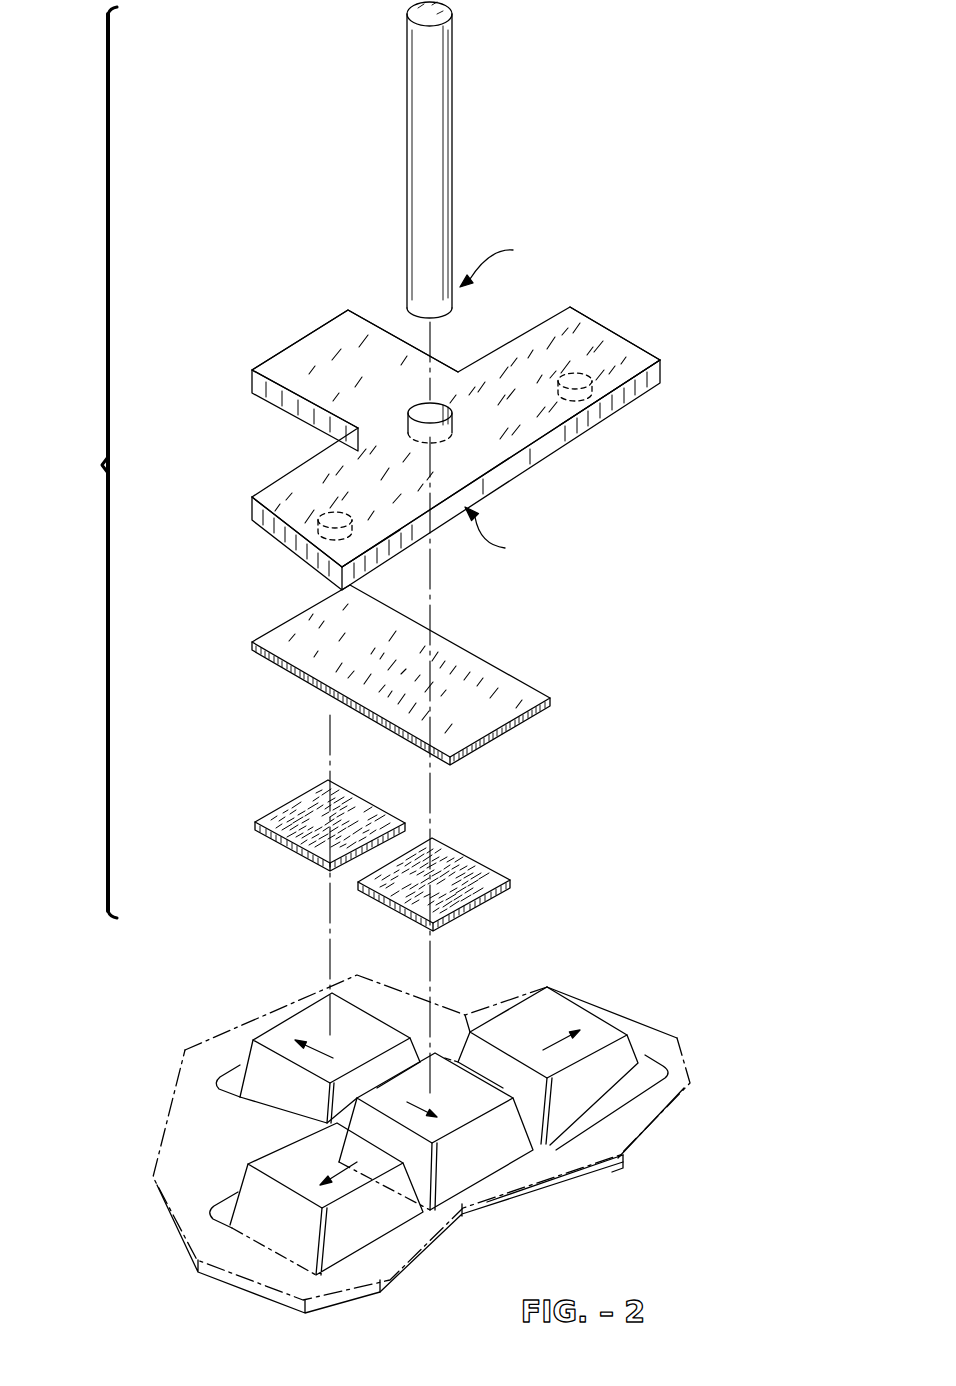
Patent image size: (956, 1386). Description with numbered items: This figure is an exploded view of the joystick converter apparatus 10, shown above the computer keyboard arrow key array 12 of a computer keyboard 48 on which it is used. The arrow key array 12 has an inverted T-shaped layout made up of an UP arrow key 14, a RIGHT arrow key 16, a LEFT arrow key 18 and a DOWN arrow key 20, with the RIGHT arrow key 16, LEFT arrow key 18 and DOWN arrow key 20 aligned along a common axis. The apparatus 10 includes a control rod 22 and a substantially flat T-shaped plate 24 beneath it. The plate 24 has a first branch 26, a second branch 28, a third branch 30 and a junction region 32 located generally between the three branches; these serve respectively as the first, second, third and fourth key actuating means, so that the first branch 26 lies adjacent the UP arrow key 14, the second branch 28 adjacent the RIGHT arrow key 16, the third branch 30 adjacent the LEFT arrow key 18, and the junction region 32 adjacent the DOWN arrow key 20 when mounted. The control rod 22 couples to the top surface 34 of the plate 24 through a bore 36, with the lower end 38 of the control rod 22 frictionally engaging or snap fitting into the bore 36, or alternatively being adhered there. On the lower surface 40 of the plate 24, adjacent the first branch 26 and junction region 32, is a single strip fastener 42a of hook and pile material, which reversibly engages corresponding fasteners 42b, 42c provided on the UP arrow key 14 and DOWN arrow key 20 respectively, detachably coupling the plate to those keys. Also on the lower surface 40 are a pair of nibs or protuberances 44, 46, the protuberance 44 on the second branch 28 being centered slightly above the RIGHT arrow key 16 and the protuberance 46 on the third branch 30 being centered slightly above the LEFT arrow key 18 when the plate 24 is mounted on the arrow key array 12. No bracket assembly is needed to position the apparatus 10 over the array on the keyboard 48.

The joystick converter apparatus 10 is at (90, 462).
The arrow key array 12 is at (376, 1144).
The UP arrow key 14 is at (253, 1108).
The RIGHT arrow key 16 is at (658, 1108).
The LEFT arrow key 18 is at (420, 1257).
The DOWN arrow key 20 is at (487, 1203).
The control rod 22 is at (440, 122).
The T-shaped plate 24 is at (451, 427).
The first branch 26 is at (298, 362).
The second branch 28 is at (583, 342).
The third branch 30 is at (283, 495).
The junction region 32 is at (497, 440).
The top surface 34 is at (398, 465).
The bore 36 is at (437, 407).
The lower end 38 is at (503, 262).
The lower surface 40 is at (505, 534).
The fastener 42a is at (497, 683).
The fastener 42b is at (280, 813).
The fastener 42c is at (497, 887).
The protuberance 44 is at (630, 338).
The protuberance 46 is at (285, 546).
The computer keyboard 48 is at (620, 1167).